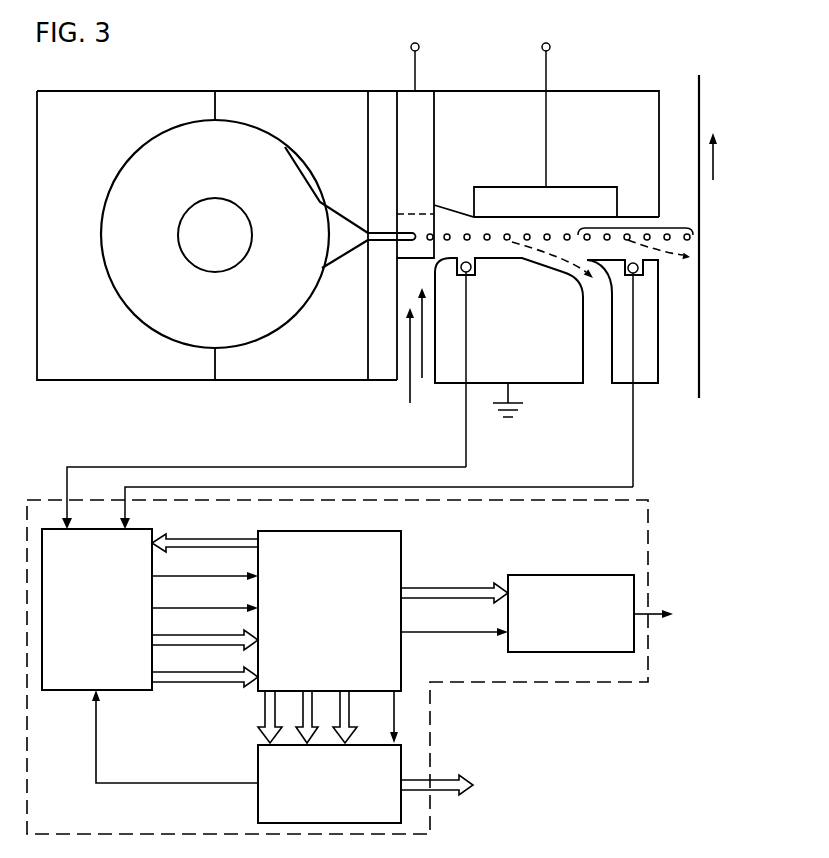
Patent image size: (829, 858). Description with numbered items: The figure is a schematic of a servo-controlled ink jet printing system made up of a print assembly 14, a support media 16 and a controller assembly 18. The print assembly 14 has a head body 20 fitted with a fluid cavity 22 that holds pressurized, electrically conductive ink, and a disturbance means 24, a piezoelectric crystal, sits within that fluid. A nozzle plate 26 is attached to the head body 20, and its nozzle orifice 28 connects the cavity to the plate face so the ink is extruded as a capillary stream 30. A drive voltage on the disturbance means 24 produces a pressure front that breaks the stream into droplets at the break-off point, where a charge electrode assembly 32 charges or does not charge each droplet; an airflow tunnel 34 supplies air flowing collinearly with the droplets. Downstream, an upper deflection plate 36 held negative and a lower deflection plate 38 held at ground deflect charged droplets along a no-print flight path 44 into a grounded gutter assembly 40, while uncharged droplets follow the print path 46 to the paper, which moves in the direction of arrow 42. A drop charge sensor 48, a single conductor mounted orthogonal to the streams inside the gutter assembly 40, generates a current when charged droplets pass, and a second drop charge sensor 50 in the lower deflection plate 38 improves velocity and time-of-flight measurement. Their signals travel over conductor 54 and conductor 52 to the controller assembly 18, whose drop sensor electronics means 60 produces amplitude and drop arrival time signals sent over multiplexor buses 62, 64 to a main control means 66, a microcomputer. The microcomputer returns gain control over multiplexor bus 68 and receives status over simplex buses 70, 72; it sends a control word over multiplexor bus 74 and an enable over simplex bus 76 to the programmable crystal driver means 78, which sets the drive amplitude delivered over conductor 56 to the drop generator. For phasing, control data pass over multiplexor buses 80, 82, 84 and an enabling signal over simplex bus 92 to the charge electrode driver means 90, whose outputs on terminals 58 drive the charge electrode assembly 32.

The print assembly 14 is at (605, 72).
The support media 16 is at (701, 330).
The controller assembly 18 is at (652, 507).
The head body 20 is at (277, 91).
The fluid cavity 22 is at (203, 333).
The disturbance means 24 is at (240, 217).
The nozzle plate 26 is at (380, 102).
The nozzle orifice 28 is at (383, 243).
The capillary stream 30 is at (406, 220).
The charge electrode assembly 32 is at (420, 102).
The airflow tunnel 34 is at (398, 399).
The upper deflection plate 36 is at (568, 198).
The lower deflection plate 38 is at (547, 370).
The gutter assembly 40 is at (647, 368).
The arrow 42 is at (713, 162).
The no-print flight path 44 is at (558, 257).
The print path 46 is at (635, 227).
The drop charge sensor 48 is at (642, 271).
The second drop charge sensor 50 is at (473, 271).
The conductor 52 is at (178, 465).
The conductor 54 is at (240, 485).
The conductor 56 is at (654, 600).
The terminals 58 is at (440, 780).
The drop sensor electronics means 60 is at (49, 527).
The multiplexor bus 62 is at (178, 640).
The multiplexor bus 64 is at (185, 673).
The main control means 66 is at (403, 535).
The multiplexor bus 68 is at (193, 537).
The simplex bus 70 is at (193, 575).
The simplex bus 72 is at (193, 607).
The multiplexor bus 74 is at (433, 588).
The simplex bus 76 is at (435, 631).
The programmable crystal driver means 78 is at (568, 575).
The multiplexor bus 80 is at (266, 722).
The multiplexor bus 82 is at (304, 728).
The multiplexor bus 84 is at (340, 729).
The charge electrode driver means 90 is at (258, 767).
The simplex bus 92 is at (391, 730).